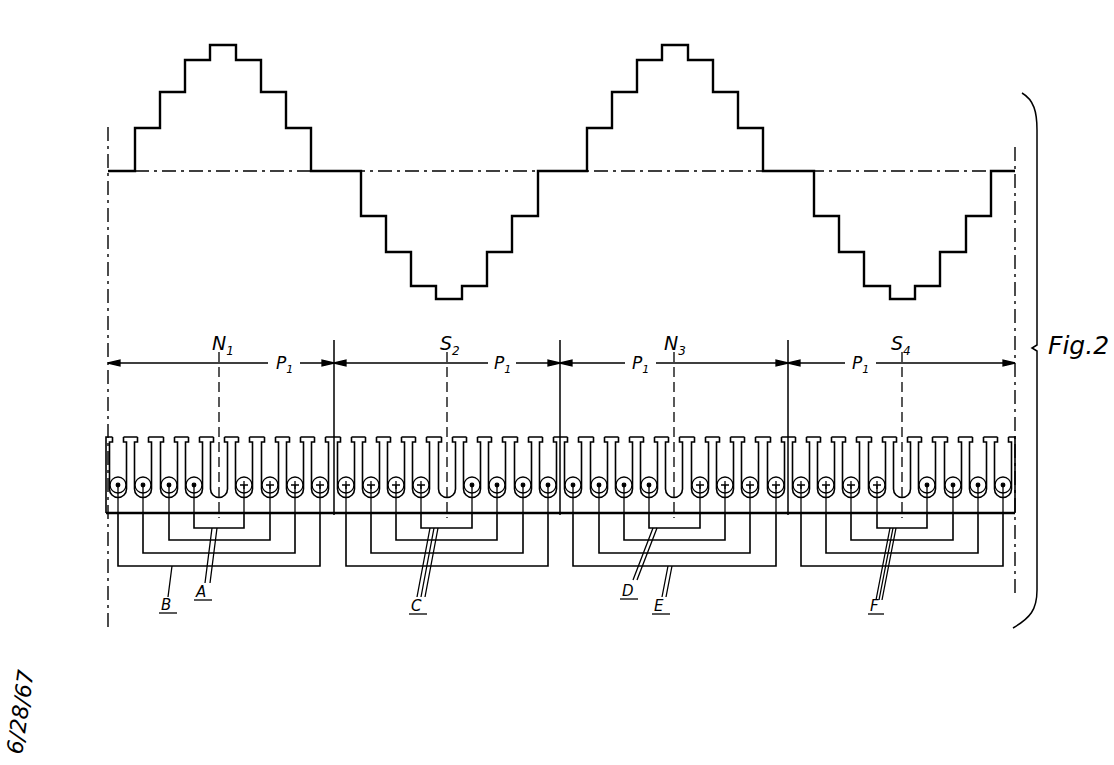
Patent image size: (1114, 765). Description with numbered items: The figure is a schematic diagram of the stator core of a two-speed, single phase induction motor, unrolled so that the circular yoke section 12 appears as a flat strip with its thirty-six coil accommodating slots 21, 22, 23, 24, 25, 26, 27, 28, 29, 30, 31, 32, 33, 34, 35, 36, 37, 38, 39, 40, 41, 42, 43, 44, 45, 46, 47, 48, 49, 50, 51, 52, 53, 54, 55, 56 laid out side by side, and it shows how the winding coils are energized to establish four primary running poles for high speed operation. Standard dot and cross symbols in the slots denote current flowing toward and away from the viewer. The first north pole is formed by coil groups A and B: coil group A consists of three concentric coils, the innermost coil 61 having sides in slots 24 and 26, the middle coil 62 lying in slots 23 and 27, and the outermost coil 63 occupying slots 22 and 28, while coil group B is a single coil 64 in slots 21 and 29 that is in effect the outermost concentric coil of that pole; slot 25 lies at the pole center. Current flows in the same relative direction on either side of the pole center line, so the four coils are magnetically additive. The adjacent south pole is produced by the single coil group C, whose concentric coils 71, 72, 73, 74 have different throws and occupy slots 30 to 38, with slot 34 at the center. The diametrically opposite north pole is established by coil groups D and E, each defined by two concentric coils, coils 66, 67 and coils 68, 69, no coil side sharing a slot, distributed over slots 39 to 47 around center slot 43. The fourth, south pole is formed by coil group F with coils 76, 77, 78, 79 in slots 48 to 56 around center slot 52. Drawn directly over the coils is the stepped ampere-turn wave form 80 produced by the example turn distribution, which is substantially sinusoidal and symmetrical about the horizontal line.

The circular yoke section 12 is at (112, 503).
The coil accommodating slot 21 is at (121, 446).
The coil accommodating slot 22 is at (143, 446).
The coil accommodating slot 23 is at (169, 446).
The coil accommodating slot 24 is at (194, 446).
The coil accommodating slot 25 is at (222, 446).
The coil accommodating slot 26 is at (247, 446).
The coil accommodating slot 27 is at (272, 446).
The coil accommodating slot 28 is at (296, 446).
The coil accommodating slot 29 is at (321, 446).
The coil accommodating slot 30 is at (346, 446).
The coil accommodating slot 31 is at (370, 446).
The coil accommodating slot 32 is at (396, 446).
The coil accommodating slot 33 is at (421, 446).
The coil accommodating slot 34 is at (449, 446).
The coil accommodating slot 35 is at (474, 446).
The coil accommodating slot 36 is at (498, 446).
The coil accommodating slot 37 is at (523, 446).
The coil accommodating slot 38 is at (548, 446).
The coil accommodating slot 39 is at (573, 446).
The coil accommodating slot 40 is at (599, 446).
The coil accommodating slot 41 is at (624, 446).
The coil accommodating slot 42 is at (649, 446).
The coil accommodating slot 43 is at (673, 446).
The coil accommodating slot 44 is at (700, 446).
The coil accommodating slot 45 is at (725, 446).
The coil accommodating slot 46 is at (750, 446).
The coil accommodating slot 47 is at (776, 446).
The coil accommodating slot 48 is at (801, 446).
The coil accommodating slot 49 is at (826, 446).
The coil accommodating slot 50 is at (851, 446).
The coil accommodating slot 51 is at (877, 446).
The coil accommodating slot 52 is at (901, 446).
The coil accommodating slot 53 is at (927, 446).
The coil accommodating slot 54 is at (953, 446).
The coil accommodating slot 55 is at (978, 446).
The coil accommodating slot 56 is at (1003, 446).
The concentric coil 61 is at (230, 530).
The concentric coil 62 is at (255, 542).
The concentric coil 63 is at (280, 555).
The coil 64 is at (282, 566).
The concentric coil 66 is at (684, 530).
The concentric coil 67 is at (709, 542).
The concentric coil 68 is at (735, 555).
The concentric coil 69 is at (737, 566).
The coil 71 is at (457, 530).
The coil 72 is at (480, 542).
The coil 73 is at (507, 555).
The coil 74 is at (510, 566).
The coil 76 is at (912, 530).
The coil 77 is at (937, 542).
The coil 78 is at (962, 555).
The coil 79 is at (957, 566).
The ampere-turn wave form 80 is at (262, 80).